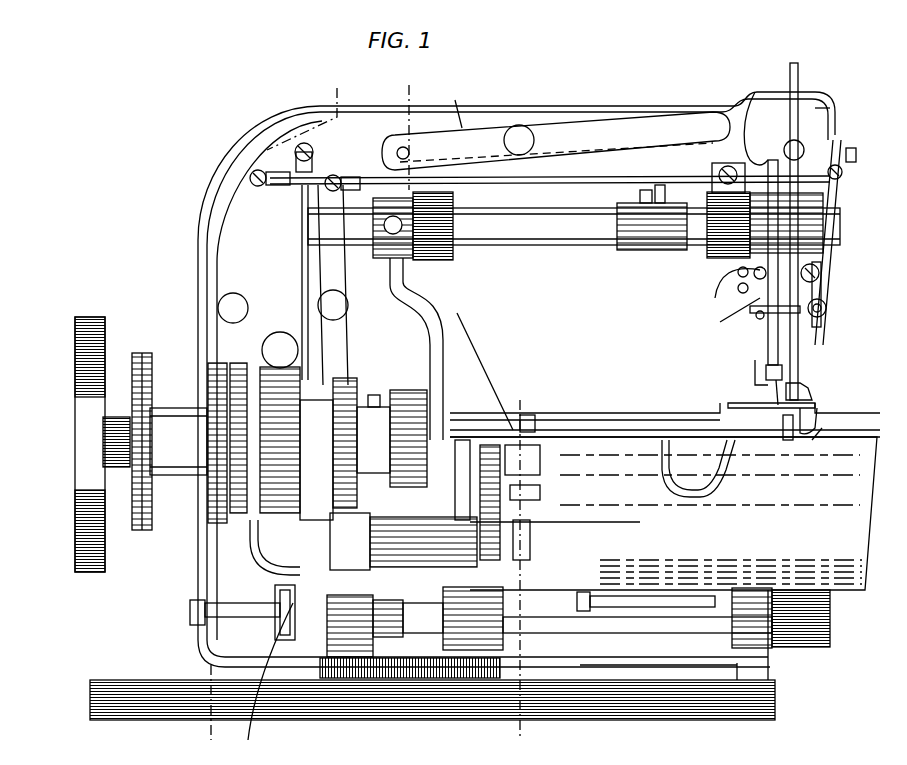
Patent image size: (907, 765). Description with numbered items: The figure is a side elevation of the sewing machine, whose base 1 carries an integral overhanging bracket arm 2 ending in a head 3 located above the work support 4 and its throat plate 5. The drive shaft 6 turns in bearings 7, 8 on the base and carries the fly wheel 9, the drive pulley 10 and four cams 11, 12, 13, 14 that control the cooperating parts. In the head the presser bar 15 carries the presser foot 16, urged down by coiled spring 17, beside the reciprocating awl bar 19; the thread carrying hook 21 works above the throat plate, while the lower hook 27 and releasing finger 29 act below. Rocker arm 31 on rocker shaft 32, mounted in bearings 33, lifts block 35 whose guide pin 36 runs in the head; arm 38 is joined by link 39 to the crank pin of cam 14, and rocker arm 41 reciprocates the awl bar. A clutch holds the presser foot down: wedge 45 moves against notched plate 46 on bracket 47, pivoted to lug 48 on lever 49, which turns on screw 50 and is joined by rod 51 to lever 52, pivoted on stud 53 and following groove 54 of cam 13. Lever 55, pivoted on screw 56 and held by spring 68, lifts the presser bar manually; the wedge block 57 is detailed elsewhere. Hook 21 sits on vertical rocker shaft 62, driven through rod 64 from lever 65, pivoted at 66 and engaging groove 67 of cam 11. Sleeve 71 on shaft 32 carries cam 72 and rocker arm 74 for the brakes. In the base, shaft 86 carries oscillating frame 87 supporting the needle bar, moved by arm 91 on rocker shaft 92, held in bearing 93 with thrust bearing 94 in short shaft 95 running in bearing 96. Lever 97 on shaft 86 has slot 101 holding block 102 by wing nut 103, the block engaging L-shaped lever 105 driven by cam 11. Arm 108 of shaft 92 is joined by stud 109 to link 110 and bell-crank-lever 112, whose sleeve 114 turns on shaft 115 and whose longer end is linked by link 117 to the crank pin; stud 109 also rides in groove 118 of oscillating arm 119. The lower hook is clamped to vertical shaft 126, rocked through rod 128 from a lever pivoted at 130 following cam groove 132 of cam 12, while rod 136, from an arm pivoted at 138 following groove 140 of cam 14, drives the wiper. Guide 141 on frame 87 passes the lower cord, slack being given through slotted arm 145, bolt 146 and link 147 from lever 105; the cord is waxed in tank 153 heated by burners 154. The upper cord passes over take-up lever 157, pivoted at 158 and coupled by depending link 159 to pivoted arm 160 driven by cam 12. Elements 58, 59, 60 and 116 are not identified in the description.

The base 1 is at (586, 665).
The bracket arm 2 is at (590, 112).
The head 3 is at (525, 414).
The work support 4 is at (708, 407).
The throat plate 5 is at (805, 404).
The drive shaft 6 is at (123, 438).
The bearing 7 is at (170, 420).
The bearing 8 is at (375, 388).
The fly wheel 9 is at (78, 428).
The drive pulley 10 is at (150, 362).
The cam 11 is at (215, 480).
The cam 12 is at (300, 377).
The cam 13 is at (350, 378).
The cam 14 is at (402, 390).
The presser bar 15 is at (652, 118).
The presser foot 16 is at (812, 346).
The coiled spring 17 is at (770, 330).
The reciprocating bar 19 is at (800, 85).
The thread carrying hook 21 is at (776, 418).
The lower hook 27 is at (738, 397).
The releasing finger 29 is at (818, 414).
The rocker arm 31 is at (775, 225).
The rocker shaft 32 is at (560, 232).
The bearings 33 is at (455, 200).
The block 35 is at (803, 148).
The guide pin 36 is at (856, 160).
The arm 38 is at (393, 228).
The link 39 is at (440, 340).
The rocker arm 41 is at (815, 230).
The wedge 45 is at (822, 292).
The notched plate 46 is at (830, 322).
The bracket 47 is at (748, 307).
The lug 48 is at (827, 308).
The lever 49 is at (836, 205).
The screw 50 is at (819, 275).
The rod 51 is at (375, 180).
The lever 52 is at (338, 272).
The stud 53 is at (340, 306).
The groove 54 is at (343, 460).
The lever 55 is at (572, 178).
The screw 56 is at (716, 176).
The wedge block 57 is at (744, 322).
The link 58 is at (727, 322).
The rod 59 is at (768, 160).
The spring 60 is at (757, 115).
The rocker shaft 62 is at (748, 375).
The rod 64 is at (298, 183).
The lever 65 is at (232, 256).
The pivot 66 is at (240, 306).
The groove 67 is at (207, 386).
The spring 68 is at (718, 284).
The sleeve 71 is at (630, 248).
The cam 72 is at (626, 204).
The rocker arm 74 is at (640, 192).
The shaft 86 is at (202, 645).
The frame 87 is at (792, 440).
The arm 91 is at (835, 620).
The rocker shaft 92 is at (650, 635).
The bearing 93 is at (765, 628).
The thrust bearing 94 is at (425, 632).
The short shaft 95 is at (385, 640).
The bearing 96 is at (355, 655).
The lever 97 is at (264, 682).
The slot 101 is at (348, 541).
The block 102 is at (315, 612).
The wing nut 103 is at (192, 622).
The L-shaped lever 105 is at (222, 520).
The arm 108 is at (496, 563).
The stud 109 is at (520, 488).
The link 110 is at (515, 470).
The bell-crank-lever 112 is at (530, 536).
The sleeve 114 is at (485, 548).
The shaft 115 is at (470, 552).
The link 116 is at (400, 558).
The link 117 is at (453, 425).
The longitudinal groove 118 is at (520, 502).
The oscillating arm 119 is at (518, 452).
The vertical shaft 126 is at (737, 445).
The rod 128 is at (555, 523).
The pivot 130 is at (274, 343).
The cam groove 132 is at (263, 452).
The rod 136 is at (601, 420).
The pivot 138 is at (423, 542).
The groove 140 is at (423, 421).
The guide 141 is at (835, 448).
The slotted arm 145 is at (300, 520).
The bolt 146 is at (256, 612).
The link 147 is at (212, 553).
The tank 153 is at (711, 519).
The burners 154 is at (650, 598).
The take-up lever 157 is at (455, 102).
The pivot 158 is at (519, 128).
The depending link 159 is at (304, 248).
The pivoted arm 160 is at (372, 440).